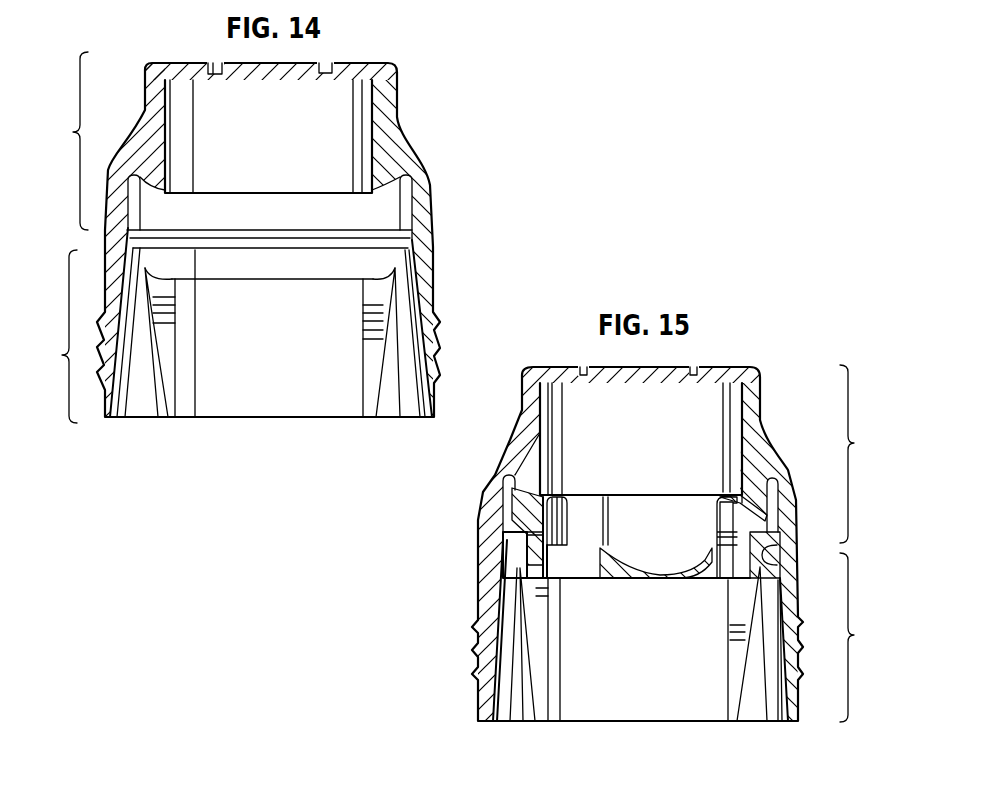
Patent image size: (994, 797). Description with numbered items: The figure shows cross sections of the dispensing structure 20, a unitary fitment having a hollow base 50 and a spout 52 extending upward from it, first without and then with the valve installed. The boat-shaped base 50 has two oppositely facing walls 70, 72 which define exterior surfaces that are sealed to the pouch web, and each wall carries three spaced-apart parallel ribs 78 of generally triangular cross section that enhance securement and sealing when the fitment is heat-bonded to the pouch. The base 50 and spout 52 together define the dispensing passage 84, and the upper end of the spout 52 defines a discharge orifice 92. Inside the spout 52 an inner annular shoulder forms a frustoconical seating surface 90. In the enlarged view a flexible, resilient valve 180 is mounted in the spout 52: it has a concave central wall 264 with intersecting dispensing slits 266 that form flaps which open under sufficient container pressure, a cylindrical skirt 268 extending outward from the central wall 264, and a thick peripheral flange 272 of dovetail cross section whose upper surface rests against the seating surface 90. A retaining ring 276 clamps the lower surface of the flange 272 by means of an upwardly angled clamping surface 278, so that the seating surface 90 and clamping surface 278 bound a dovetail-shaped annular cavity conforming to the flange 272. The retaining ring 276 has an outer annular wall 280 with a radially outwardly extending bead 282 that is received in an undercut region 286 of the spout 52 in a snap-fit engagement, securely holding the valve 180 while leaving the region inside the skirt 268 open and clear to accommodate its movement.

In FIG. 14, the dispensing structure 20 is at (414, 114).
In FIG. 15, the dispensing structure 20 is at (787, 363).
In FIG. 14, the hollow base 50 is at (230, 335).
In FIG. 15, the hollow base 50 is at (701, 637).
In FIG. 14, the spout 52 is at (206, 141).
In FIG. 15, the spout 52 is at (710, 454).
In FIG. 14, the wall 70 is at (437, 262).
In FIG. 14, the wall 72 is at (104, 283).
In FIG. 14, the ribs 78 is at (440, 374).
In FIG. 14, the dispensing passage 84 is at (221, 117).
In FIG. 14, the seating surface 90 is at (375, 192).
In FIG. 15, the seating surface 90 is at (508, 512).
In FIG. 14, the discharge orifice 92 is at (320, 73).
In FIG. 15, the discharge orifice 92 is at (694, 372).
In FIG. 15, the valve 180 is at (592, 495).
In FIG. 15, the central wall 264 is at (593, 580).
In FIG. 15, the dispensing slits 266 is at (652, 553).
In FIG. 15, the skirt 268 is at (700, 505).
In FIG. 15, the peripheral flange 272 is at (592, 456).
In FIG. 15, the retaining ring 276 is at (521, 554).
In FIG. 15, the clamping surface 278 is at (510, 520).
In FIG. 15, the outer annular wall 280 is at (520, 486).
In FIG. 15, the bead 282 is at (510, 540).
In FIG. 15, the undercut region 286 is at (505, 555).